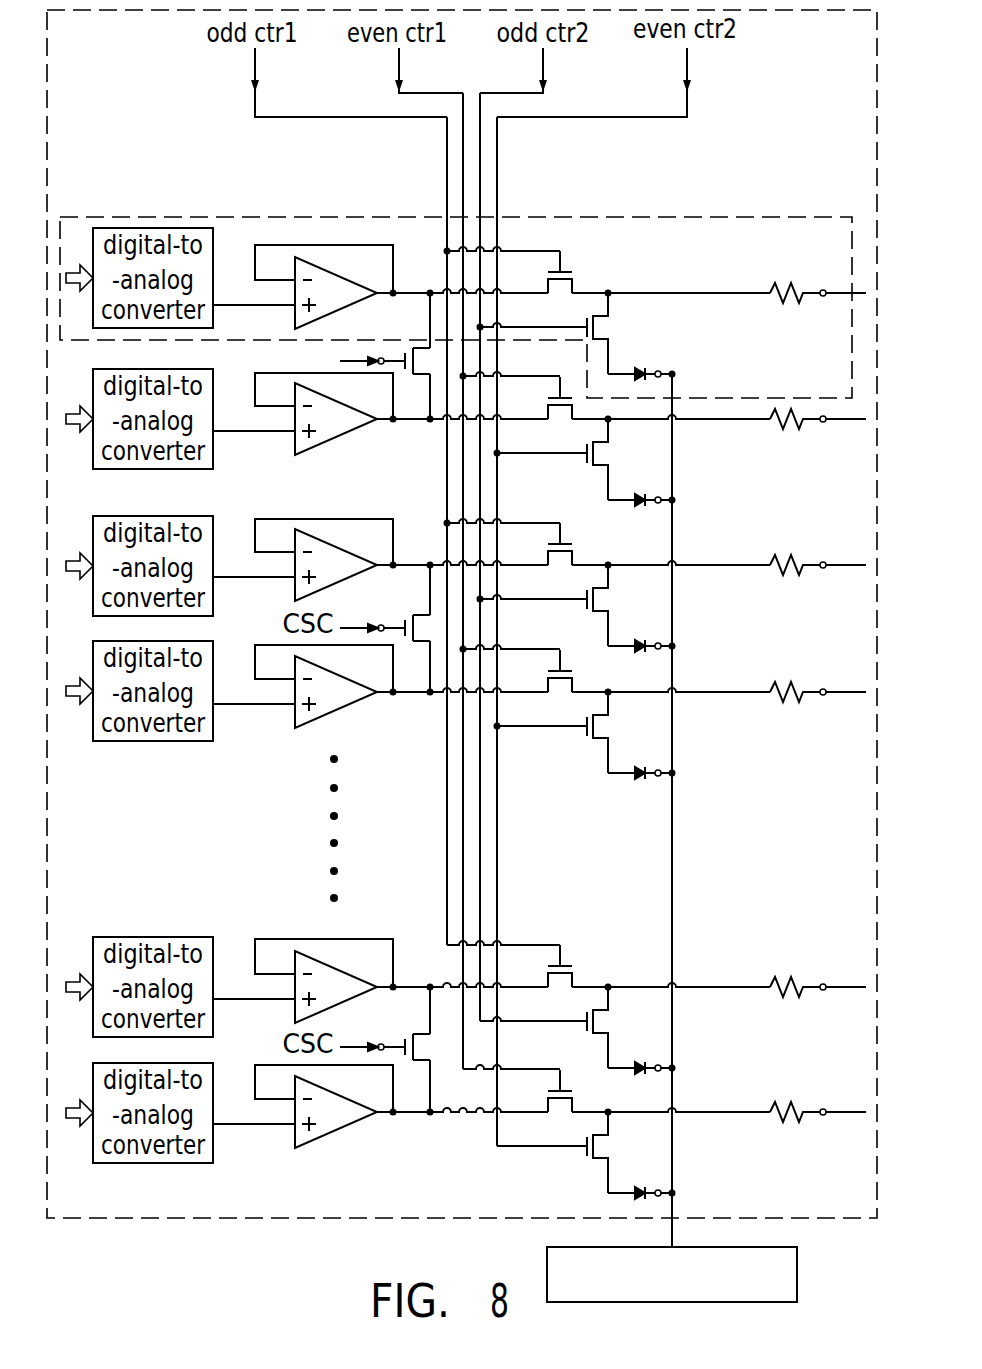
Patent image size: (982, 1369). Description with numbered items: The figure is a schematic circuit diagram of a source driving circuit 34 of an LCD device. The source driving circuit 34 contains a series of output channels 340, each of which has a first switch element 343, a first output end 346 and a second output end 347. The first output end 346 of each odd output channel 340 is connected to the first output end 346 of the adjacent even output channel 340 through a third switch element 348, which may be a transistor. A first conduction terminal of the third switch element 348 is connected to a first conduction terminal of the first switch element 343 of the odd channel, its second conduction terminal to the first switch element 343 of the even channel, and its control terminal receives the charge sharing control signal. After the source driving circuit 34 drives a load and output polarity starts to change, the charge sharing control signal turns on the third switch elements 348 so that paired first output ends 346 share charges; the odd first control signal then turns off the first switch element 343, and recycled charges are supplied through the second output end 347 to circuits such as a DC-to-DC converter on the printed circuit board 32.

The printed circuit board 32 is at (797, 1270).
The source driving circuit 34 is at (187, 1220).
The output channel 340 is at (143, 215).
The first switch element 343 is at (574, 270).
The first output end 346 is at (823, 290).
The second output end 347 is at (659, 370).
The third switch element 348 is at (420, 362).